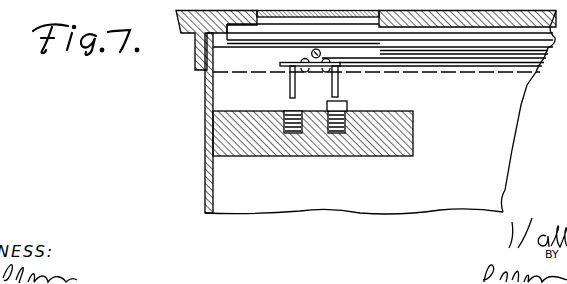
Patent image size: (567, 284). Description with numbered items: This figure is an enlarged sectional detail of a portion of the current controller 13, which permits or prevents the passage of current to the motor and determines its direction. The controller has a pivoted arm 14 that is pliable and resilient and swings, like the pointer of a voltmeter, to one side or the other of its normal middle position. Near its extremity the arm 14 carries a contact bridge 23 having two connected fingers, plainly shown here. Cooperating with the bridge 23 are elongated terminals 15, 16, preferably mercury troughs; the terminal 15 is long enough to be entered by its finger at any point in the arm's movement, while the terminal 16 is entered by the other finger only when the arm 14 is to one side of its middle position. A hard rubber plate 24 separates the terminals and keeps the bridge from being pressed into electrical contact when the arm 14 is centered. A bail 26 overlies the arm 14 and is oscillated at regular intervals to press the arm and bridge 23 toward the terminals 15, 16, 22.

The current controller 13 is at (226, 88).
The pivoted arm 14 is at (428, 68).
The terminal 15 is at (293, 134).
The terminal 16 is at (339, 134).
The block 22 is at (414, 140).
The contact bridge 23 is at (291, 88).
The hard rubber plate 24 is at (356, 92).
The bail 26 is at (495, 55).